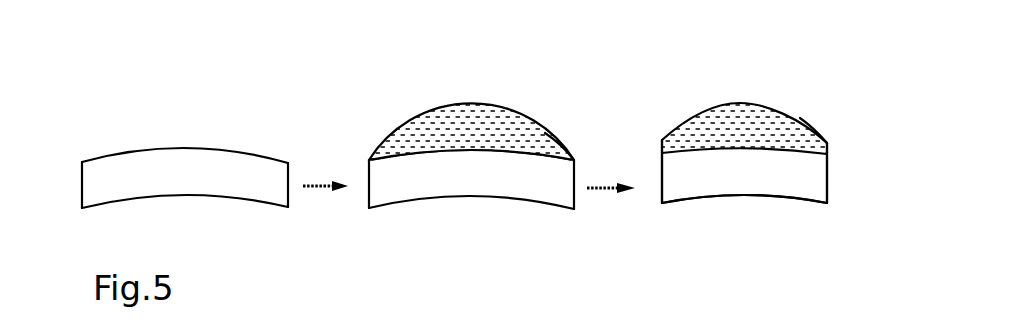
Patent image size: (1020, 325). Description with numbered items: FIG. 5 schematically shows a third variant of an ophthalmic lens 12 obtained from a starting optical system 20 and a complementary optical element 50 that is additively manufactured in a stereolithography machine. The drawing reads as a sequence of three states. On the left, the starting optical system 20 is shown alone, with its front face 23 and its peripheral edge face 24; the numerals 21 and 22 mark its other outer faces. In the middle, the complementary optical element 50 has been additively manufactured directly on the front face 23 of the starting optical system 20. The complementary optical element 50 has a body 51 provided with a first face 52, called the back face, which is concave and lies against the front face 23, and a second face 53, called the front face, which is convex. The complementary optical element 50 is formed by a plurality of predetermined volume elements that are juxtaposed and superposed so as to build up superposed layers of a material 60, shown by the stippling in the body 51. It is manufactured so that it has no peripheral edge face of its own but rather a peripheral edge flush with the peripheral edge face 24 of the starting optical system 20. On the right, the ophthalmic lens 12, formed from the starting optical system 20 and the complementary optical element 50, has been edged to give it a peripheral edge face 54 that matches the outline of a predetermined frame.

The ophthalmic lens 12 is at (810, 69).
The starting optical system 20 is at (433, 164).
The lens body / edge face 21 is at (84, 171).
The rear surface 22 is at (187, 196).
The front face 23 is at (185, 148).
The peripheral edge face 24 is at (290, 204).
The complementary optical element 50 is at (614, 143).
The body 51 is at (406, 124).
The first face 52 is at (428, 165).
The second face 53 is at (555, 140).
The peripheral edge face 54 is at (828, 147).
The material 60 is at (527, 132).